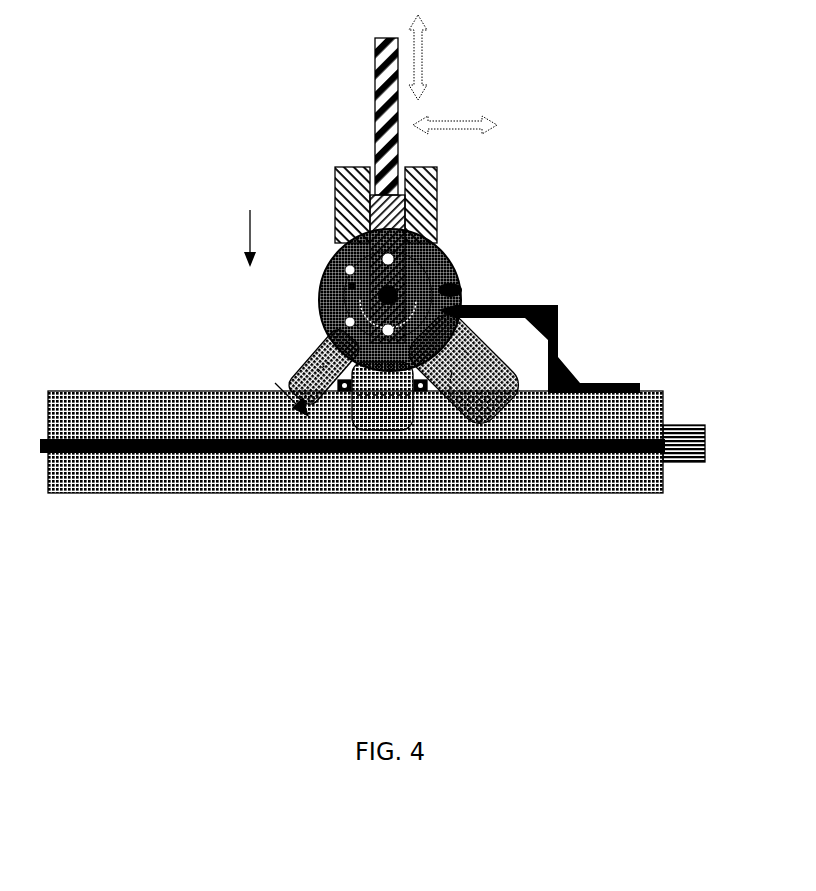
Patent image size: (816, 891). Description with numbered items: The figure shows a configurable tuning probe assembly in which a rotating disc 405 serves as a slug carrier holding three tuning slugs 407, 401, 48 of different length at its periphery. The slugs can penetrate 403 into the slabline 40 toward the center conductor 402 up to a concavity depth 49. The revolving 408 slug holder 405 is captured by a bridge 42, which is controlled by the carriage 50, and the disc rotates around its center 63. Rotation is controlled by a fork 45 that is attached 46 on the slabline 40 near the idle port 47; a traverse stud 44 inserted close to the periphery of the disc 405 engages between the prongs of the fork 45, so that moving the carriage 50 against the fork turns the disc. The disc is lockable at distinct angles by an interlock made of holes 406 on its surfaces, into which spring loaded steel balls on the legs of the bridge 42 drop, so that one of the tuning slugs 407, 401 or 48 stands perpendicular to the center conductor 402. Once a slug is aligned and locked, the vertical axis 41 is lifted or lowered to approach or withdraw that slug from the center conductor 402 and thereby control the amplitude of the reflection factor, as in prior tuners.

The slabline 40 is at (148, 391).
The vertical axis 41 is at (376, 118).
The bridge 42 is at (437, 243).
The traverse stud 44 is at (463, 289).
The fork 45 is at (560, 333).
The fork attachment 46 is at (642, 388).
The idle port 47 is at (688, 423).
The tuning slug 48 is at (505, 393).
The concavity depth 49 is at (455, 375).
The carriage 50 is at (437, 175).
The rotation center 63 is at (337, 228).
The tuning slug 401 is at (340, 425).
The center conductor 402 is at (232, 455).
The penetration direction 403 is at (250, 228).
The rotating disc 405 is at (328, 266).
The holes 406 is at (348, 286).
The tuning slug 407 is at (316, 352).
The revolving motion 408 is at (281, 400).